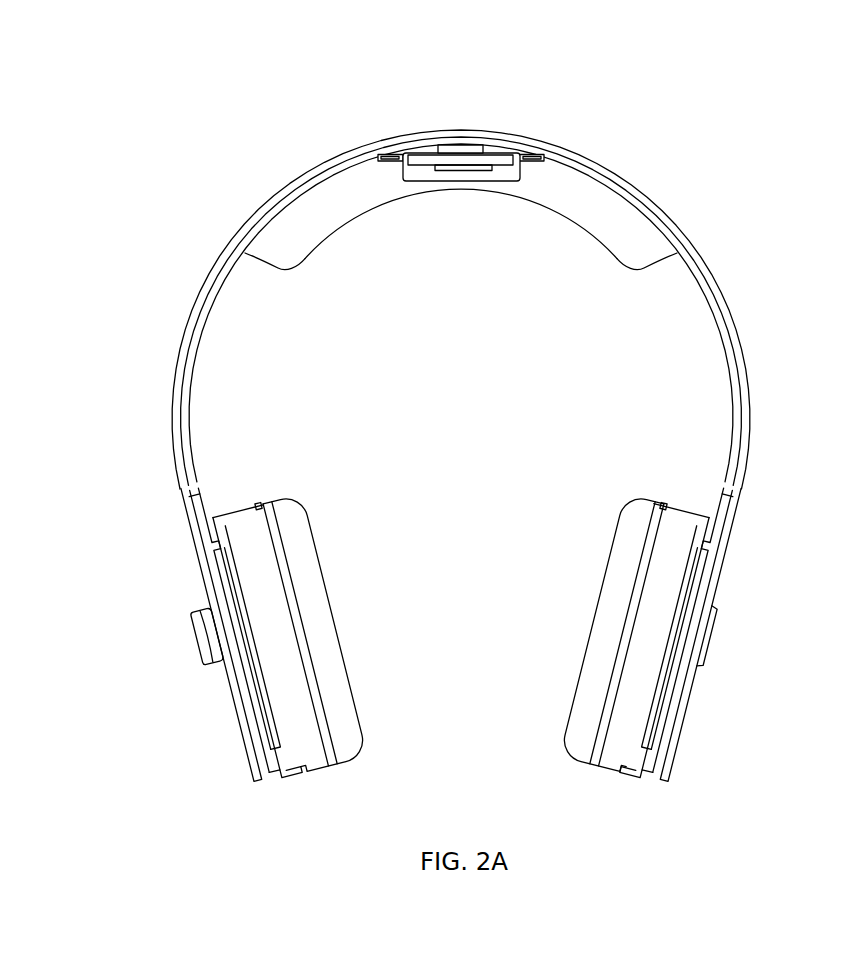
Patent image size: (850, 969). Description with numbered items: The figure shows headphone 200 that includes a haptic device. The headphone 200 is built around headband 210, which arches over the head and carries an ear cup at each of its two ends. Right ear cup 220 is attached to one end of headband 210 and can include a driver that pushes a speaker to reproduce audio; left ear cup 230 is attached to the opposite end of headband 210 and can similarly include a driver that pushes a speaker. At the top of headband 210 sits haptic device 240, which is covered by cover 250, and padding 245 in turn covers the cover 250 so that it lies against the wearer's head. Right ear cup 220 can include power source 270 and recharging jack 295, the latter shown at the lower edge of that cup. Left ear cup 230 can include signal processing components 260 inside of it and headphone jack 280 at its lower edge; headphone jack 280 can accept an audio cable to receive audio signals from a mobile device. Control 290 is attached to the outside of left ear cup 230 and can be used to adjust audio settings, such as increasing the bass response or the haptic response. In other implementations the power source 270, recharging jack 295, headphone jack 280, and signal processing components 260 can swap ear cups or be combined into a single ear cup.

The headphone 200 is at (639, 116).
The headband 210 is at (676, 222).
The right ear cup 220 is at (678, 517).
The left ear cup 230 is at (258, 503).
The haptic device 240 is at (442, 152).
The padding 245 is at (296, 237).
The cover 250 is at (403, 178).
The signal processing components 260 is at (290, 683).
The power source 270 is at (655, 627).
The headphone jack 280 is at (292, 783).
The control 290 is at (201, 645).
The recharging jack 295 is at (630, 782).